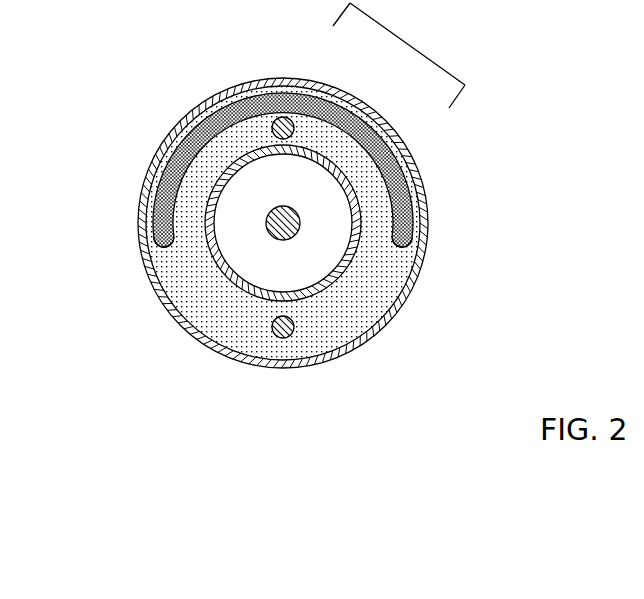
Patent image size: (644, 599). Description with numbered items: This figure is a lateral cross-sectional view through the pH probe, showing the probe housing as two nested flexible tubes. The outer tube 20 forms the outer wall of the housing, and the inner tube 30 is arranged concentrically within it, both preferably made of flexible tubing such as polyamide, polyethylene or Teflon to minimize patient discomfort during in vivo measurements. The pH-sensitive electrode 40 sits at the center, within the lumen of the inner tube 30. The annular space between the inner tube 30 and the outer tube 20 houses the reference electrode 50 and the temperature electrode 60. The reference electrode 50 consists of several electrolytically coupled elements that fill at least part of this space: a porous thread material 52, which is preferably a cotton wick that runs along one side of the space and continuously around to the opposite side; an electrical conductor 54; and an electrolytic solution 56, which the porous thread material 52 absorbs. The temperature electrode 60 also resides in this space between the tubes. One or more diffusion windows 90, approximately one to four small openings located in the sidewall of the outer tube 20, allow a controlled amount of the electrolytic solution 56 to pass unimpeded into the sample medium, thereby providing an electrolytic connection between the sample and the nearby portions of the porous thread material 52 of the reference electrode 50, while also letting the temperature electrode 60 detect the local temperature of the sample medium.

The outer tube 20 is at (150, 284).
The inner tube 30 is at (236, 291).
The pH-sensitive electrode 40 is at (288, 228).
The reference electrode 50 is at (411, 46).
The porous thread material 52 is at (347, 113).
The electrical conductor 54 is at (285, 120).
The electrolytic solution 56 is at (362, 167).
The temperature electrode 60 is at (285, 339).
The diffusion windows 90 is at (142, 220).